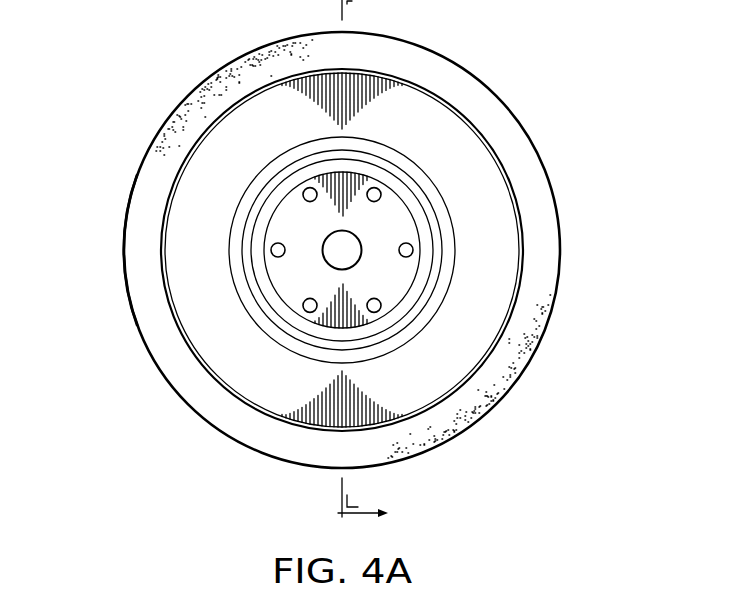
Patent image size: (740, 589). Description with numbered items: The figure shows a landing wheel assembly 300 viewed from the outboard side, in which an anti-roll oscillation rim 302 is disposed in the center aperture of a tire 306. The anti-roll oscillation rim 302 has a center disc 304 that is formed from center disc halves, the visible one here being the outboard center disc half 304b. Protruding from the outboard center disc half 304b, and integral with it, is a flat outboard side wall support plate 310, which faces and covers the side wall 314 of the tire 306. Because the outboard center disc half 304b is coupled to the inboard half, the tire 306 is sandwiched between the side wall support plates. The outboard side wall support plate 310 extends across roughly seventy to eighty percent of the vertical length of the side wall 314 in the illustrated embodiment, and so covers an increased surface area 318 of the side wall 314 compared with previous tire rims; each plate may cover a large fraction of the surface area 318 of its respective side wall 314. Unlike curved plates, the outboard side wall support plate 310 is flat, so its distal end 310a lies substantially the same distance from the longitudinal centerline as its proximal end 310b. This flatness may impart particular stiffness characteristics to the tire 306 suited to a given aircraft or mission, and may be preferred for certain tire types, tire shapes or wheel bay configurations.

The landing wheel assembly 300 is at (202, 56).
The anti-roll oscillation rim 302 is at (507, 163).
The center disc 304 is at (393, 200).
The outboard center disc half 304b is at (342, 250).
The tire 306 is at (561, 250).
The outboard side wall support plate 310 is at (483, 323).
The distal end of outboard side wall support plate 310a is at (470, 380).
The proximal end of outboard side wall support plate 310b is at (382, 350).
The side wall 314 is at (152, 186).
The surface area of side wall 318 is at (150, 303).